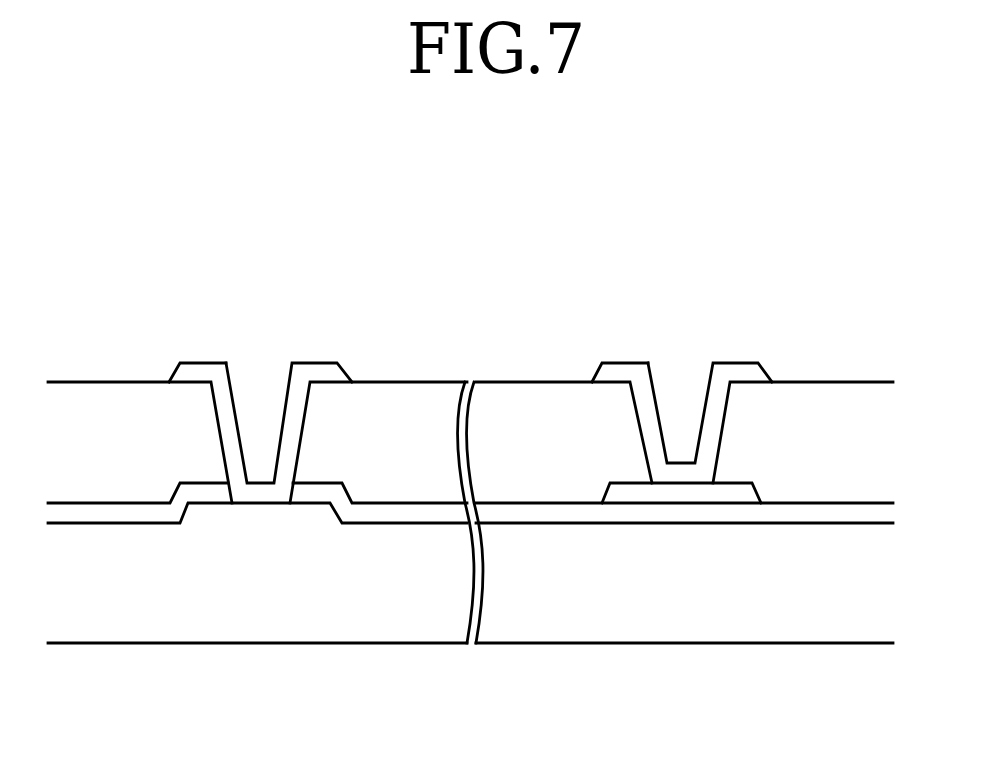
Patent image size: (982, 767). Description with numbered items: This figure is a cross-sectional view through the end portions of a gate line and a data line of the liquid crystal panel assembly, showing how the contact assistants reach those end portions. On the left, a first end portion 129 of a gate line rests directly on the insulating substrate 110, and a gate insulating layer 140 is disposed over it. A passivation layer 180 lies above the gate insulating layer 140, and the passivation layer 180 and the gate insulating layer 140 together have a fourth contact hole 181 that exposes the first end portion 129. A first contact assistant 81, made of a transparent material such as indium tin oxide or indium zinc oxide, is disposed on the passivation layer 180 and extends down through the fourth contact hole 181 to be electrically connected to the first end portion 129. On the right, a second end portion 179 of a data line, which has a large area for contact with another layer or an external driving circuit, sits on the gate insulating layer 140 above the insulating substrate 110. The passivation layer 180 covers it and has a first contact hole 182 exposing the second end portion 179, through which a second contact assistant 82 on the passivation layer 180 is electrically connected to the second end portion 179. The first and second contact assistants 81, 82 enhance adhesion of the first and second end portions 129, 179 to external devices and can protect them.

The insulating substrate 110 is at (383, 610).
The first end portion 129 is at (262, 512).
The gate insulating layer 140 is at (110, 512).
The second end portion 179 is at (677, 492).
The passivation layer 180 is at (98, 425).
The first contact assistant 81 is at (199, 373).
The second contact assistant 82 is at (620, 373).
The fourth contact hole 181 is at (218, 432).
The first contact hole 182 is at (640, 430).